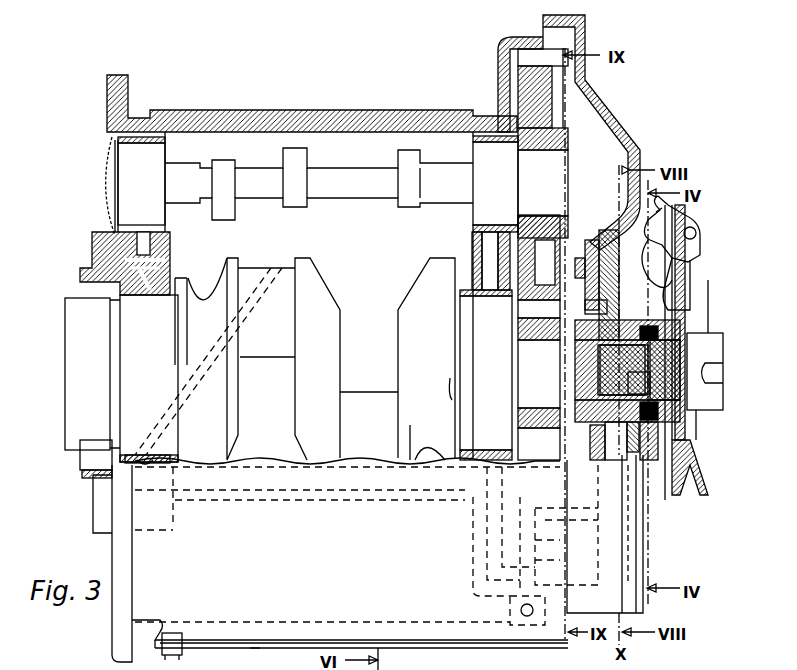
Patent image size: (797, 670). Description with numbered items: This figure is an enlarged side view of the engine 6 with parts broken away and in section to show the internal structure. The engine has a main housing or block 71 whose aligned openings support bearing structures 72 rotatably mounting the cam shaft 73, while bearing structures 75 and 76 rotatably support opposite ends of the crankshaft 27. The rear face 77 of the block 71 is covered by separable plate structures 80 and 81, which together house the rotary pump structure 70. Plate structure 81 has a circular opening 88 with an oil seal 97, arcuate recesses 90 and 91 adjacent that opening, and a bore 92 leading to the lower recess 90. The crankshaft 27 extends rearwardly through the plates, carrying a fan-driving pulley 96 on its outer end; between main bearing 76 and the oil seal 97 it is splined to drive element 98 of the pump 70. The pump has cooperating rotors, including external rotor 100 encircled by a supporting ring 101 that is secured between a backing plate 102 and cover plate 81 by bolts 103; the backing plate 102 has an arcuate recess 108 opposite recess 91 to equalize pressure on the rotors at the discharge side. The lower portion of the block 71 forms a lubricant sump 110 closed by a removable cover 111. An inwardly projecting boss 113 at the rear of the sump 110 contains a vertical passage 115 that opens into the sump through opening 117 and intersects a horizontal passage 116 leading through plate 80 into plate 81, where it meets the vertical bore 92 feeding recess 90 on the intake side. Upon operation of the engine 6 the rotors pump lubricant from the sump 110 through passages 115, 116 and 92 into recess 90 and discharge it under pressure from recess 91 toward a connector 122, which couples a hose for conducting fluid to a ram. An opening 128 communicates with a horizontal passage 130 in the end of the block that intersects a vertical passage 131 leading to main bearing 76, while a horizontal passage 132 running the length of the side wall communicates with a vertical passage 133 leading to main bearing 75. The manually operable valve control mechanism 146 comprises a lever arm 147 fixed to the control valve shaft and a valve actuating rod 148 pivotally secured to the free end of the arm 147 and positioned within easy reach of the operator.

The engine 6 is at (380, 245).
The crankshaft 27 is at (340, 360).
The pump structure 70 is at (625, 389).
The main housing or block 71 is at (362, 106).
The bearing structures 72 is at (495, 140).
The cam shaft 73 is at (374, 170).
The bearing structure 75 is at (163, 298).
The bearing structure 76 is at (473, 300).
The rear face 77 is at (564, 116).
The plate structure 80 is at (622, 128).
The plate structure 81 is at (645, 548).
The circular opening 88 is at (639, 384).
The arcuate recess 90 is at (655, 447).
The arcuate recess 91 is at (622, 370).
The bore 92 is at (638, 522).
The pulley 96 is at (706, 476).
The oil seal 97 is at (665, 370).
The element 98 is at (592, 310).
The external rotor 100 is at (592, 285).
The supporting ring 101 is at (603, 240).
The backing plate 102 is at (578, 390).
The bolts 103 is at (600, 250).
The arcuate recess 108 is at (565, 340).
The sump 110 is at (272, 613).
The removable cover 111 is at (264, 659).
The boss 113 is at (510, 600).
The vertical passage 115 is at (551, 533).
The horizontal passage 116 is at (572, 500).
The opening 117 is at (529, 616).
The connector 122 is at (404, 663).
The transverse opening 128 is at (587, 582).
The horizontal passage 130 is at (551, 560).
The vertical passage 131 is at (487, 525).
The horizontal passage 132 is at (340, 490).
The vertical passage 133 is at (142, 456).
The manually operable valve control mechanism 146 is at (704, 240).
The lever arm 147 is at (454, 662).
The valve actuating rod 148 is at (668, 215).